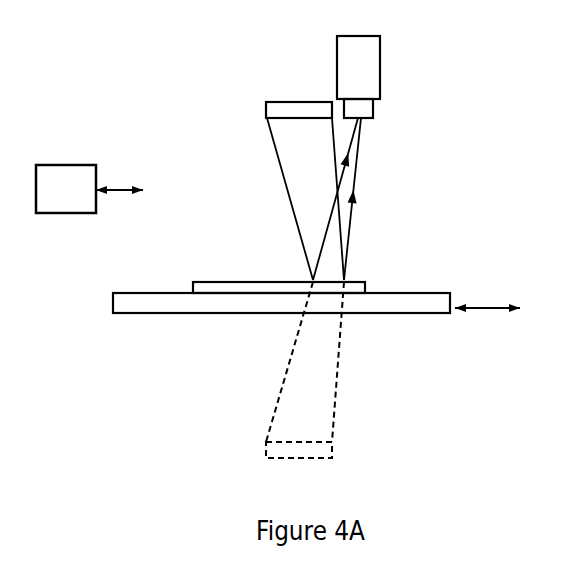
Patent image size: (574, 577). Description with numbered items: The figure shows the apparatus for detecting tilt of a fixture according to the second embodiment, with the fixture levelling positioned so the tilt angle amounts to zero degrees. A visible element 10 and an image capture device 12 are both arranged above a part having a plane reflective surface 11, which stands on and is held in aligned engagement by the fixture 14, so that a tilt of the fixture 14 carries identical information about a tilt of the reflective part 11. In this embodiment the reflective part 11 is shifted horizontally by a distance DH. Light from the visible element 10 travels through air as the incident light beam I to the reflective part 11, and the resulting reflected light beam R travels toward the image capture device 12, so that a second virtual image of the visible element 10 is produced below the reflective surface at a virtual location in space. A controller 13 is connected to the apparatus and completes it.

The visible element 10 is at (275, 105).
The part having a plane reflective surface 11 is at (360, 290).
The image capture device 12 is at (372, 76).
The controller 13 is at (89, 189).
The fixture 14 is at (443, 303).
The incident light beam I is at (273, 149).
The reflected light beam R is at (355, 178).
The horizontal shift distance DH is at (487, 330).